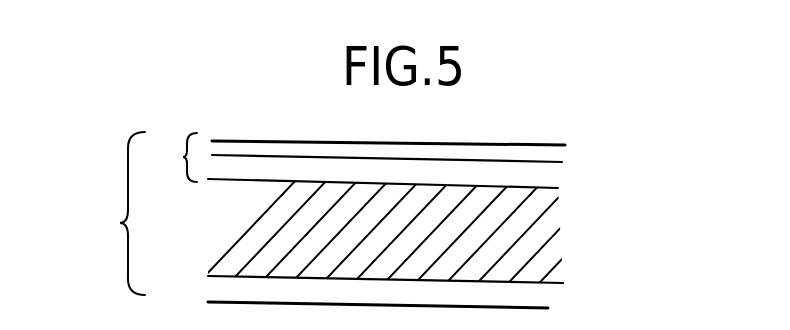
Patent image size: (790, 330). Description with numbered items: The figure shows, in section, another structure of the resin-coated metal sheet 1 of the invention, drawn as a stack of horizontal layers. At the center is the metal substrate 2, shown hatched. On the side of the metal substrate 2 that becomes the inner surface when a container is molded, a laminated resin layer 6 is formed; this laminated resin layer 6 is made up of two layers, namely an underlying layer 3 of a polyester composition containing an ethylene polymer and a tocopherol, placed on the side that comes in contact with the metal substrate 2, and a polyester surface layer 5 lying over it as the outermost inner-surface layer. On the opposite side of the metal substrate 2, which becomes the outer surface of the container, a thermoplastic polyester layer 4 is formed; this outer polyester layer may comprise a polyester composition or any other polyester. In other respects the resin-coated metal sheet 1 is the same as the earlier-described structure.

The resin-coated metal sheet 1 is at (108, 238).
The metal substrate 2 is at (545, 227).
The layer of a polyester composition 3 is at (545, 180).
The thermoplastic polyester layer 4 is at (533, 293).
The polyester surface layer 5 is at (547, 155).
The laminated resin layer 6 is at (178, 157).